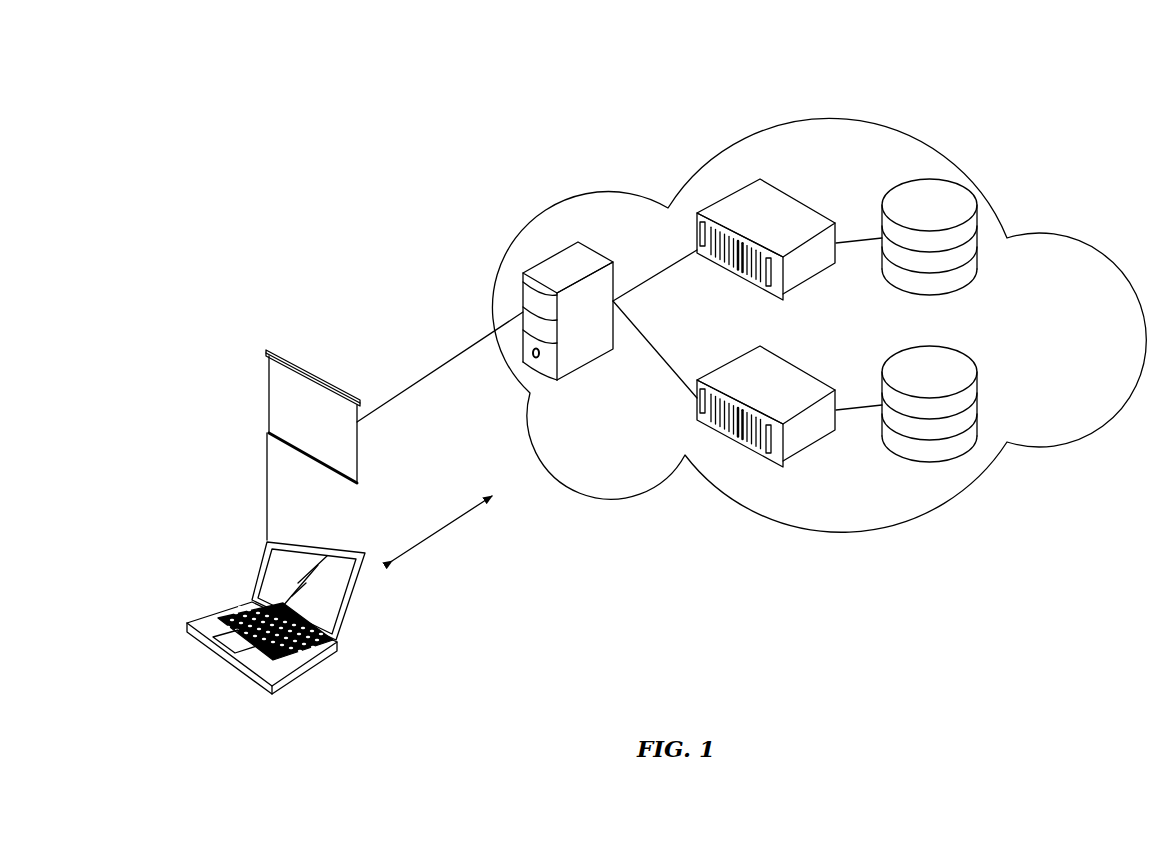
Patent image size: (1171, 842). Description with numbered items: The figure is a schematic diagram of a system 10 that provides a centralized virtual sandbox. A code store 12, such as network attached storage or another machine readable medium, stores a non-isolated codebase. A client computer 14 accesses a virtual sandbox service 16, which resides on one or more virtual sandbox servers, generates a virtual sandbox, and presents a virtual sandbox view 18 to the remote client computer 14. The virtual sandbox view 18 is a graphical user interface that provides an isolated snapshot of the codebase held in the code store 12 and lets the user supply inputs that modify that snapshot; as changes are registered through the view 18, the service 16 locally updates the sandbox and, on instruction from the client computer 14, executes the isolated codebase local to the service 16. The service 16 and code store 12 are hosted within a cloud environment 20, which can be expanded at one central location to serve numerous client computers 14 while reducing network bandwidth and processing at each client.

The system 10 is at (1084, 86).
The code store 12 is at (833, 109).
The client computer 14 is at (314, 542).
The virtual sandbox service 16 is at (552, 258).
The virtual sandbox view 18 is at (317, 373).
The cloud environment 20 is at (1075, 237).